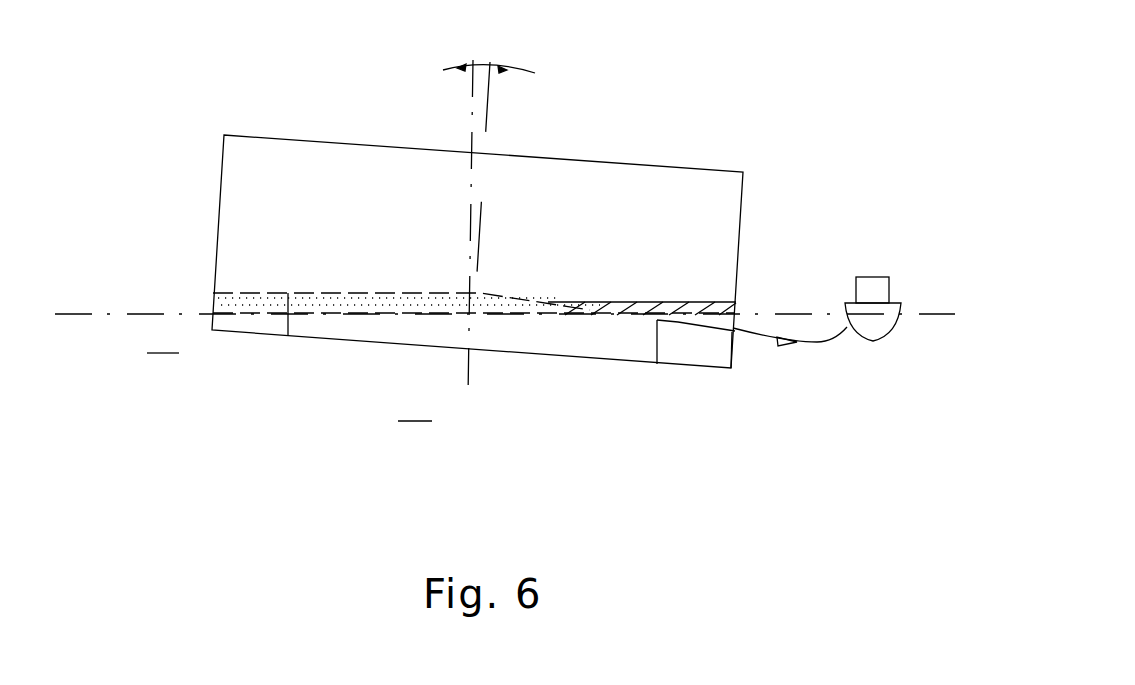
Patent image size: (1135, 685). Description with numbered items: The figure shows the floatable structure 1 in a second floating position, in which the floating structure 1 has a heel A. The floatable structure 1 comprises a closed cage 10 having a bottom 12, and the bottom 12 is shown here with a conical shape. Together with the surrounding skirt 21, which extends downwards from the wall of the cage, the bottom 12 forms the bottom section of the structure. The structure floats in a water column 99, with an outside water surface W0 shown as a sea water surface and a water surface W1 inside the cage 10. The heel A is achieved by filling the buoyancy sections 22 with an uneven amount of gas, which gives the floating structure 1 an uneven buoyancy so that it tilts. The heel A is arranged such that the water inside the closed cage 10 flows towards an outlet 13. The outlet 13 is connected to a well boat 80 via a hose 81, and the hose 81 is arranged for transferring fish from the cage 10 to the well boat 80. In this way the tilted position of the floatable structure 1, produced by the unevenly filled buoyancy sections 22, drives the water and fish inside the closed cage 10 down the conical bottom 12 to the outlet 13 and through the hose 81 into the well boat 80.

The floatable structure 1 is at (738, 99).
The closed cage 10 is at (348, 190).
The bottom 12 is at (315, 293).
The outlet 13 is at (733, 328).
The skirt 21 is at (733, 350).
The buoyancy sections 22 is at (687, 350).
The well boat 80 is at (873, 277).
The hose 81 is at (817, 342).
The water column 99 is at (289, 375).
The outside water surface W0 is at (160, 313).
The water surface inside the cage W1 is at (672, 322).
The heel A is at (489, 223).